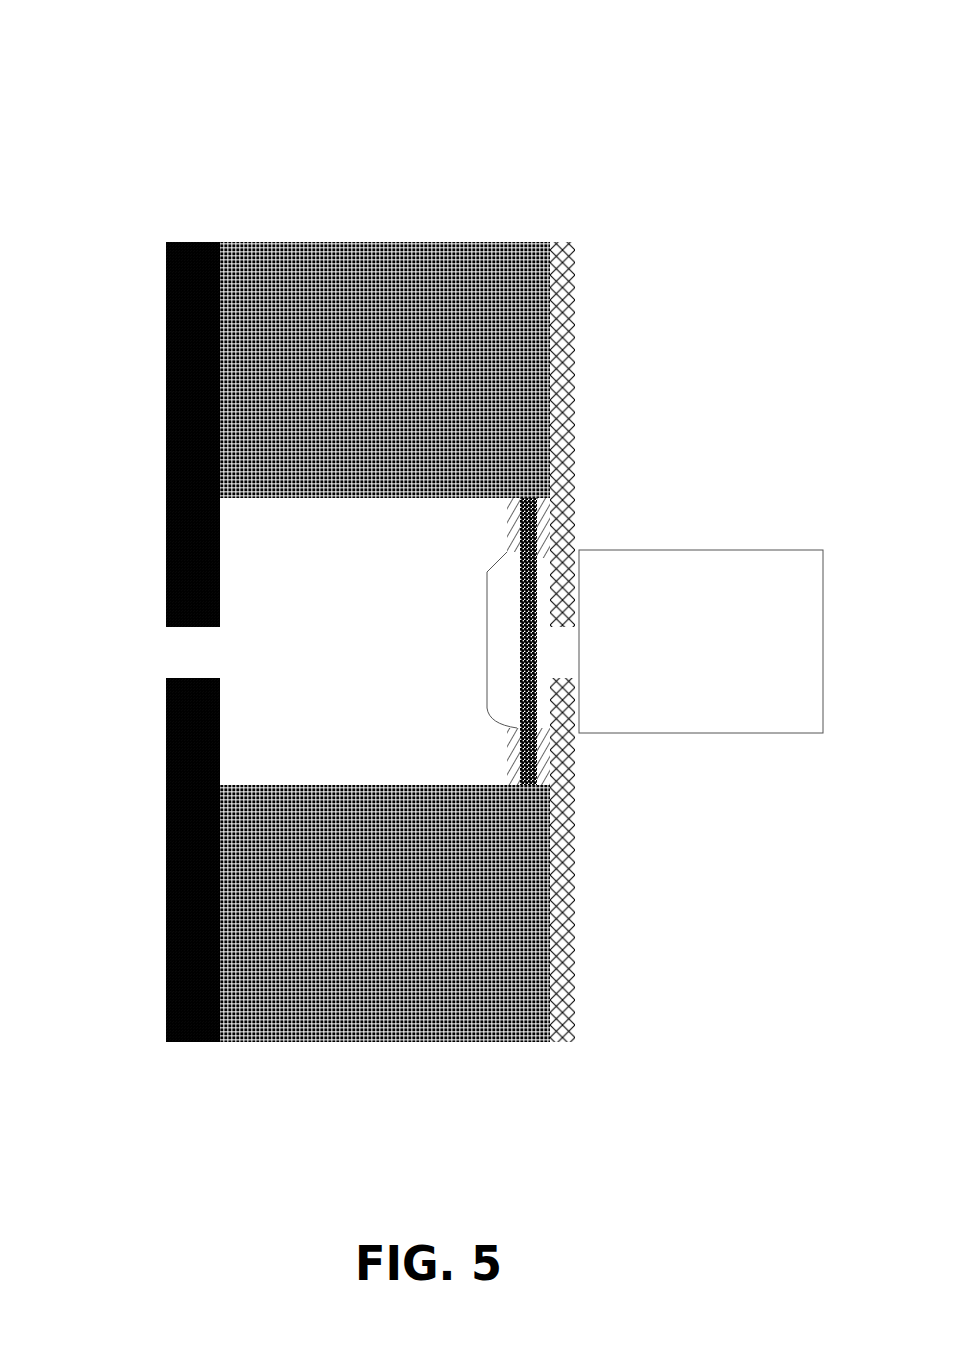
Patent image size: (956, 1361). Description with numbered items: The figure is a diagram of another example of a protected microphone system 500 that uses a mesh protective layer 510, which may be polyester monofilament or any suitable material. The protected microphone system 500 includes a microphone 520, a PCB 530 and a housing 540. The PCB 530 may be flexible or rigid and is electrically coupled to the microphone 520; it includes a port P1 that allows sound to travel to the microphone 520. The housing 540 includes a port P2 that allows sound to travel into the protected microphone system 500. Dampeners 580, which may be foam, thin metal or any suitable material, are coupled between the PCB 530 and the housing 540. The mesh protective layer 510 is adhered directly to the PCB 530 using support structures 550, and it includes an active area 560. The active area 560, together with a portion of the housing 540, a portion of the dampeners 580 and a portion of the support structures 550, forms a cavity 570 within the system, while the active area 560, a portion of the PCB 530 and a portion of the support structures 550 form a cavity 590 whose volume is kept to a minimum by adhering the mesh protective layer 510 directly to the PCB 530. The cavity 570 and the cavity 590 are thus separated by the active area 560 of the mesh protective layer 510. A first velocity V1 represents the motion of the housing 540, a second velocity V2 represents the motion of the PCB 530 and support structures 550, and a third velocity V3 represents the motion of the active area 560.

The protected microphone system 500 is at (106, 126).
The mesh protective layer 510 is at (521, 651).
The microphone 520 is at (702, 550).
The PCB 530 is at (563, 242).
The housing 540 is at (205, 242).
The support structures 550 is at (507, 520).
The active area 560 is at (487, 638).
The cavity 570 is at (240, 733).
The dampeners 580 is at (395, 242).
The cavity 590 is at (540, 706).
The first velocity V1 is at (132, 415).
The second velocity V2 is at (570, 1067).
The third velocity V3 is at (494, 596).
The port P1 is at (565, 642).
The port P2 is at (161, 643).